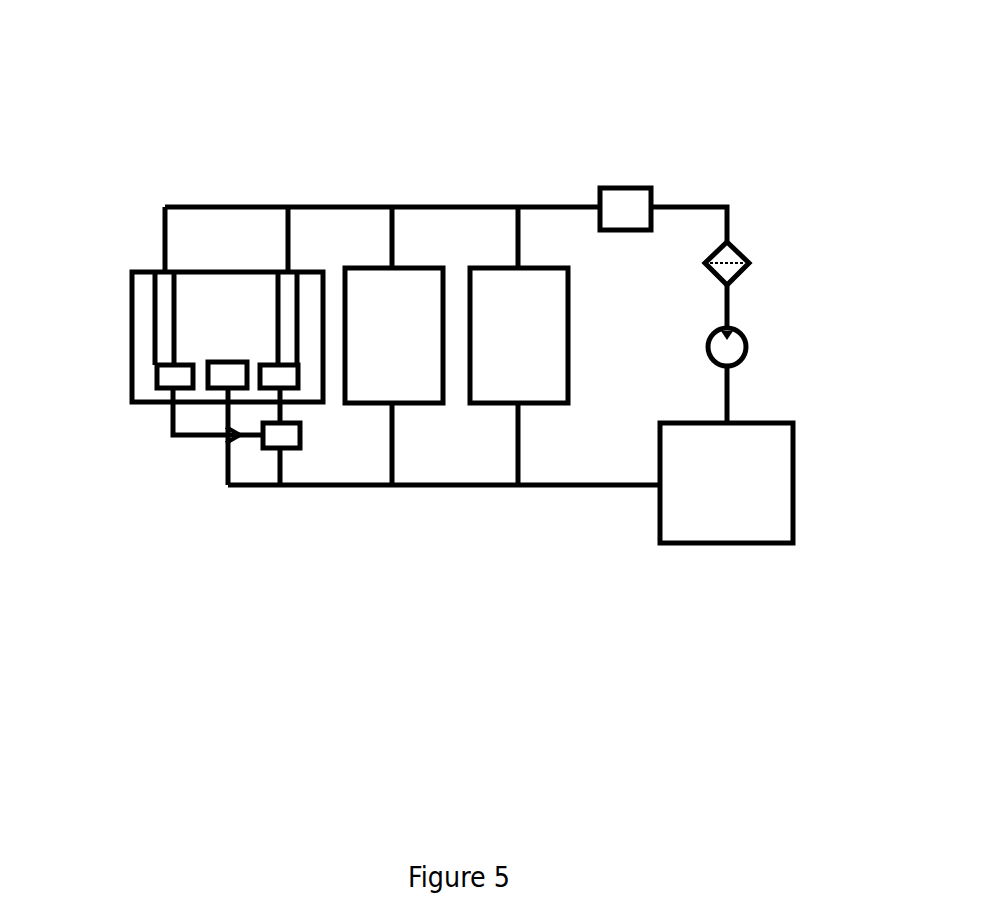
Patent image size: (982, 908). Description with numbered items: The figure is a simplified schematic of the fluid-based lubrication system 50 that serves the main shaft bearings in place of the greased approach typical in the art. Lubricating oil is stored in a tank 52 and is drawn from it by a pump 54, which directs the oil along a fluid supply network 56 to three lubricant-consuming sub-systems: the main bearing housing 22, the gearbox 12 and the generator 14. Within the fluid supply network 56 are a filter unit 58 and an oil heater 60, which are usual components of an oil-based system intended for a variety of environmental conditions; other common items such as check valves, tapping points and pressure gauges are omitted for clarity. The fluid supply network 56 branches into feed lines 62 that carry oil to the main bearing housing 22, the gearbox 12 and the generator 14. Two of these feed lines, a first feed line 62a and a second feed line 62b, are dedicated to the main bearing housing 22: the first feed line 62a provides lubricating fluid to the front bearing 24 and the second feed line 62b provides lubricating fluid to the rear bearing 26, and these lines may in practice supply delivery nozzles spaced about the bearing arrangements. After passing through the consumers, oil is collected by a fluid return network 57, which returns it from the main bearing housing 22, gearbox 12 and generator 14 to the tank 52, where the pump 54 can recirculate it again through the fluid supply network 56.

The lubrication system 50 is at (768, 88).
The gearbox 12 is at (408, 347).
The generator 14 is at (532, 347).
The main bearing housing 22 is at (130, 308).
The front bearing 24 is at (177, 335).
The rear bearing 26 is at (276, 285).
The tank 52 is at (742, 494).
The pump 54 is at (747, 353).
The fluid supply network 56 is at (735, 212).
The fluid return network 57 is at (393, 488).
The filter unit 58 is at (750, 267).
The oil heater 60 is at (622, 187).
The feed lines 62 is at (390, 230).
The first feed line 62a is at (162, 235).
The second feed line 62b is at (286, 232).